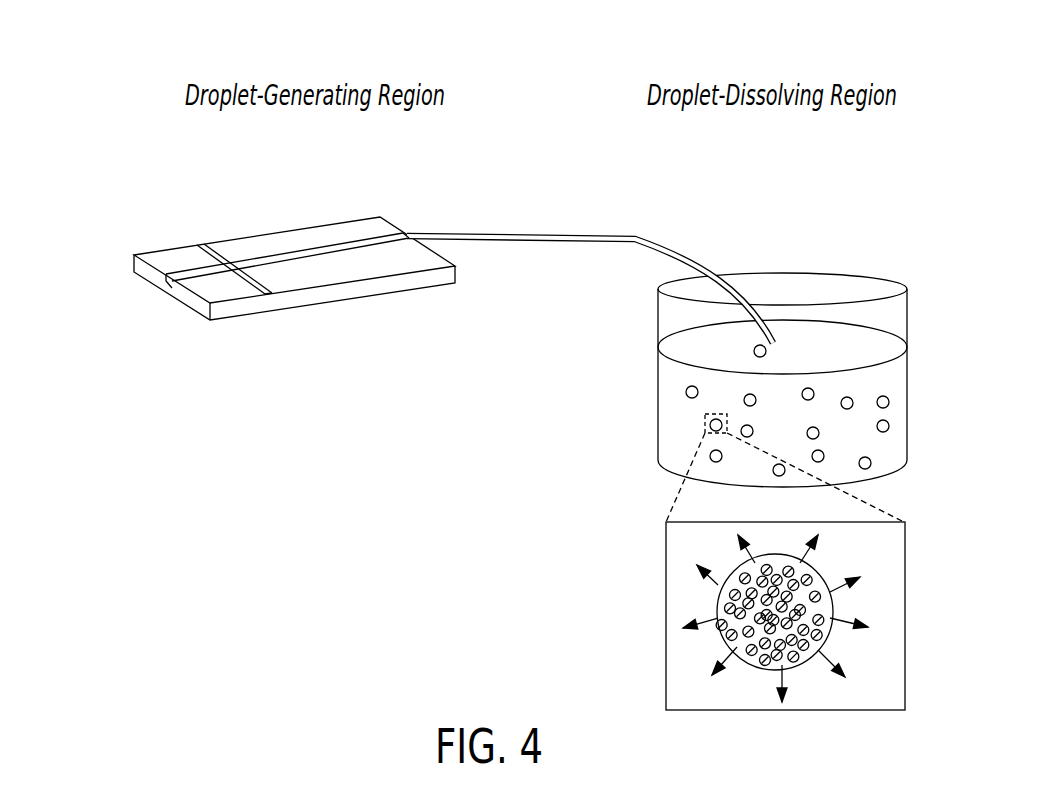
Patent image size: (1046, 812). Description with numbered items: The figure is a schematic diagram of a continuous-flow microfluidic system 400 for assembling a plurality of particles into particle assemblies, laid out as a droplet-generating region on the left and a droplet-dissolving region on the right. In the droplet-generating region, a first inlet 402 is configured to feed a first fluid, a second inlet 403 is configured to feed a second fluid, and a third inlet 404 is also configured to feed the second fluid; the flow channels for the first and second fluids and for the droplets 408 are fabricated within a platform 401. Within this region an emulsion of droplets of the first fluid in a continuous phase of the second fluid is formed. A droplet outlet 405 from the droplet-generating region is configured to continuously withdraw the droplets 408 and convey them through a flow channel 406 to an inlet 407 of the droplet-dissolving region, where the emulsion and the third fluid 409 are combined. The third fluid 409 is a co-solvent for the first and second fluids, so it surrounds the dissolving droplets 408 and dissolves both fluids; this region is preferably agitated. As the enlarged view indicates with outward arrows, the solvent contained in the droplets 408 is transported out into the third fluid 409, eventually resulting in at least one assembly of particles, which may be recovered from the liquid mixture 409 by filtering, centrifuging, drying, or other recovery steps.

The continuous-flow microfluidic system 400 is at (117, 100).
The platform 401 is at (297, 223).
The first inlet 402 is at (160, 272).
The second inlet 403 is at (202, 243).
The third inlet 404 is at (260, 292).
The droplet outlet 405 is at (410, 236).
The flow channel 406 is at (550, 236).
The inlet of droplet-dissolving region 407 is at (787, 335).
The droplets 408 is at (703, 423).
The third fluid 409 is at (887, 445).